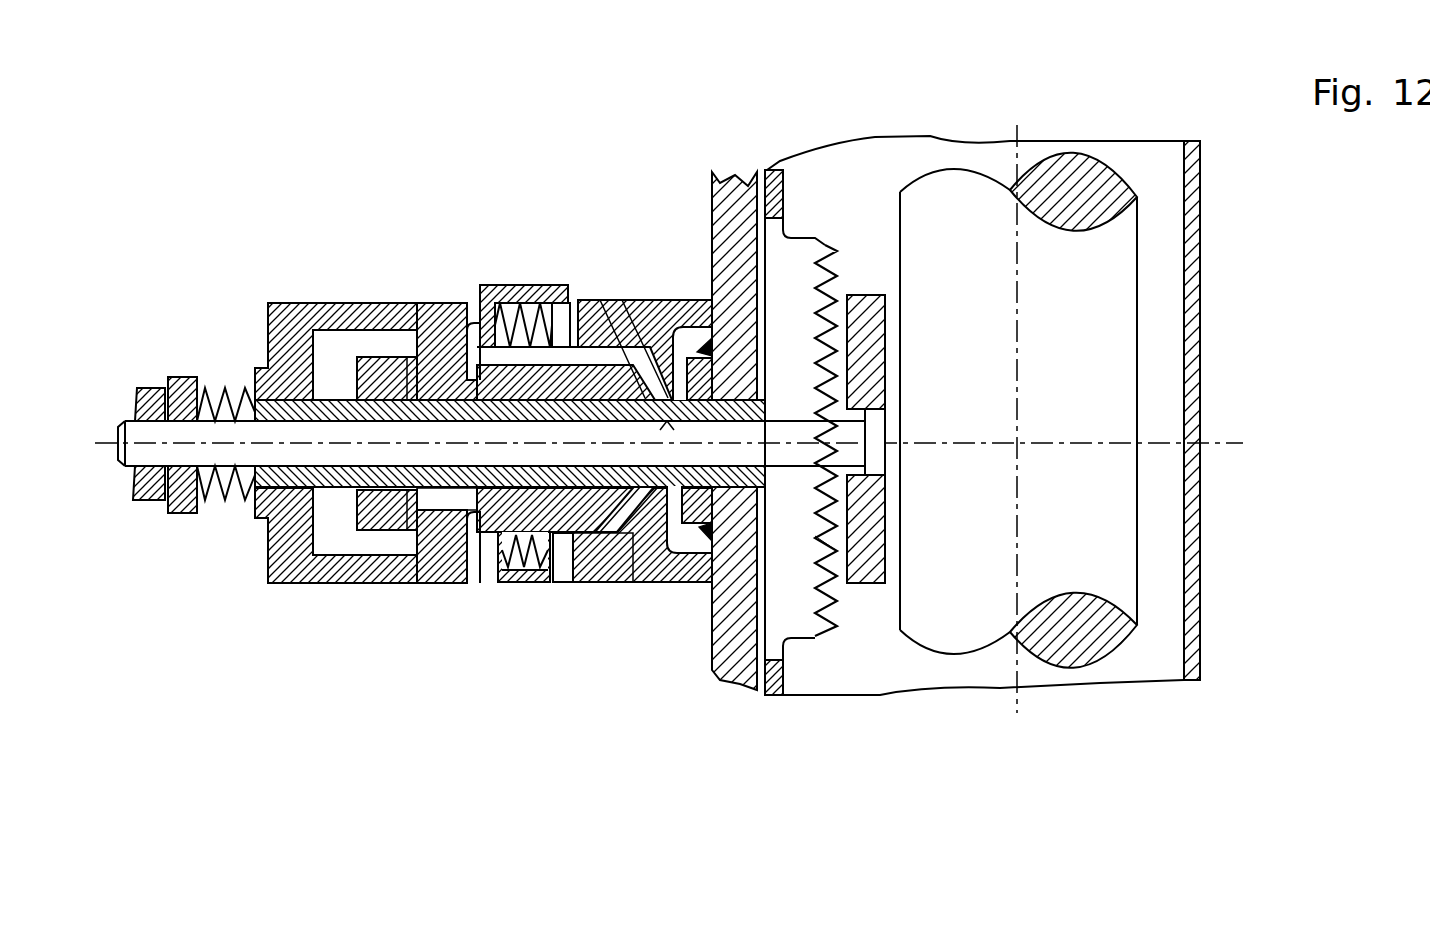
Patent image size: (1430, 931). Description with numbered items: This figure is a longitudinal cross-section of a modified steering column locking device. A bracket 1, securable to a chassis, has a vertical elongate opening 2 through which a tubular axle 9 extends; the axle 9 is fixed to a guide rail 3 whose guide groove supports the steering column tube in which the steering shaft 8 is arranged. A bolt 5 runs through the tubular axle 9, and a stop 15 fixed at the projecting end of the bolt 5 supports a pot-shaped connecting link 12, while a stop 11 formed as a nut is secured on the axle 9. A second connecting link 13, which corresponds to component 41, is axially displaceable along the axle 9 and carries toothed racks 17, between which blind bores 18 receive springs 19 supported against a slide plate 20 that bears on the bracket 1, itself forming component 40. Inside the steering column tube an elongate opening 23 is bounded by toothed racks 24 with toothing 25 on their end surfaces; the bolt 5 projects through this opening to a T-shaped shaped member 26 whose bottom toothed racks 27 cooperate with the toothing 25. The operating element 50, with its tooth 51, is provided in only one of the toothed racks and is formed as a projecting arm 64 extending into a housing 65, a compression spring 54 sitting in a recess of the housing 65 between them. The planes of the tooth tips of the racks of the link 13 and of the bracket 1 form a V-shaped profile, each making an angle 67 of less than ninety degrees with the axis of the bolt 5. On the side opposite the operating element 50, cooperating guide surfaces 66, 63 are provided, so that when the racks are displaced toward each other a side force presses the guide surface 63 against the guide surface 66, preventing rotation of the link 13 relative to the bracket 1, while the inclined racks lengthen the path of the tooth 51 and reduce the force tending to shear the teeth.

The bracket 1 is at (613, 330).
The vertical elongate opening 2 is at (678, 560).
The guide rail 3 is at (723, 192).
The bolt 5 is at (243, 457).
The steering shaft 8 is at (1098, 367).
The tubular axle 9 is at (432, 378).
The stop 11 is at (383, 510).
The connecting link 12 is at (284, 316).
The connecting link 13 is at (445, 520).
The stop 15 is at (149, 492).
The toothed racks 17 is at (650, 545).
The blind bores 18 is at (500, 570).
The springs 19 is at (512, 568).
The slide plate 20 is at (568, 540).
The elongate opening 23 is at (777, 252).
The toothed racks 24 is at (810, 255).
The toothing 25 is at (840, 560).
The shaped member 26 is at (882, 562).
The toothed racks 27 is at (872, 553).
The component 40 is at (662, 557).
The component 41 is at (581, 380).
The operating element 50 is at (533, 335).
The tooth 51 is at (633, 360).
The compression spring 54 is at (514, 300).
The guide surface 63 is at (590, 540).
The projecting arm 64 is at (560, 325).
The housing 65 is at (486, 298).
The guide surface 66 is at (588, 525).
The angle 67 is at (671, 340).